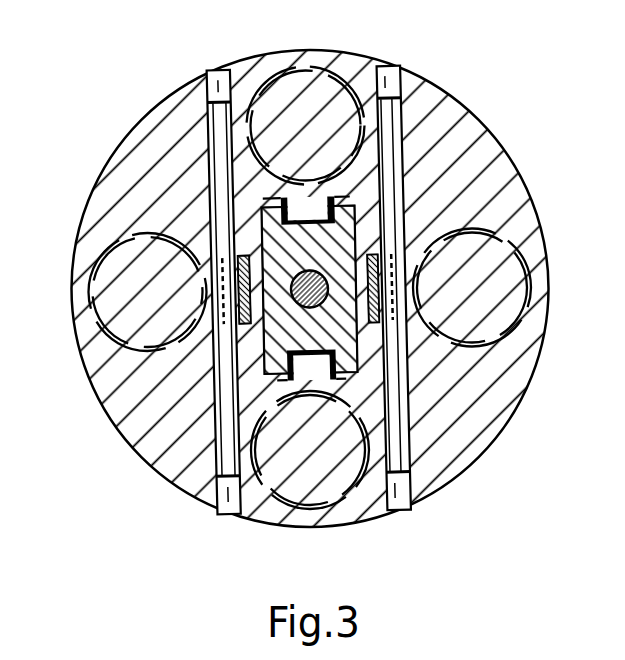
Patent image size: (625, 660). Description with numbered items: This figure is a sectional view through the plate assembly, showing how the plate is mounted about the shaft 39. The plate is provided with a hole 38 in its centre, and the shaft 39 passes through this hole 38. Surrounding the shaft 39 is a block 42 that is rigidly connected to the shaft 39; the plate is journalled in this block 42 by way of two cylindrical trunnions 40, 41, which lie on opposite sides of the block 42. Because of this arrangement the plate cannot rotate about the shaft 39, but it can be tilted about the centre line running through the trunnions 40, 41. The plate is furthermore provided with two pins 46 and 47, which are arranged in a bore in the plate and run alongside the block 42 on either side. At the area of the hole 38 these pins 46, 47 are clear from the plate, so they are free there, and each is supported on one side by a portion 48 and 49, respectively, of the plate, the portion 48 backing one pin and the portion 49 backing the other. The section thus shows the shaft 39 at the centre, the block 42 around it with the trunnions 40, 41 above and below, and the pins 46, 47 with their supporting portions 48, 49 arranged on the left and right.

The hole 38 is at (367, 231).
The shaft 39 is at (319, 294).
The cylindrical trunnion 40 is at (309, 209).
The cylindrical trunnion 41 is at (316, 367).
The block 42 is at (341, 250).
The pin 46 is at (392, 118).
The pin 47 is at (212, 137).
The portion of the plate 48 is at (410, 283).
The portion of the plate 49 is at (210, 280).